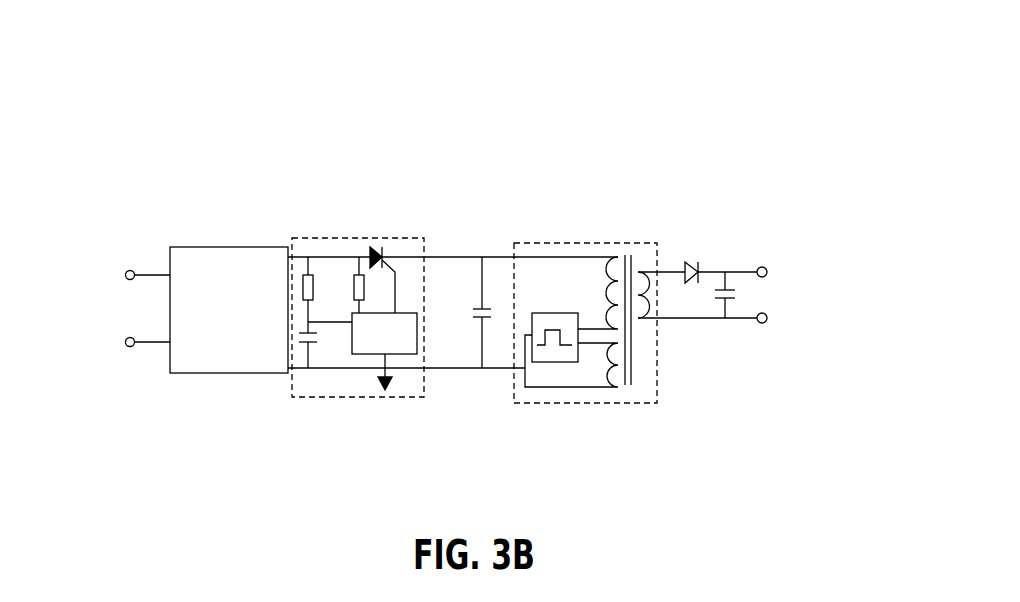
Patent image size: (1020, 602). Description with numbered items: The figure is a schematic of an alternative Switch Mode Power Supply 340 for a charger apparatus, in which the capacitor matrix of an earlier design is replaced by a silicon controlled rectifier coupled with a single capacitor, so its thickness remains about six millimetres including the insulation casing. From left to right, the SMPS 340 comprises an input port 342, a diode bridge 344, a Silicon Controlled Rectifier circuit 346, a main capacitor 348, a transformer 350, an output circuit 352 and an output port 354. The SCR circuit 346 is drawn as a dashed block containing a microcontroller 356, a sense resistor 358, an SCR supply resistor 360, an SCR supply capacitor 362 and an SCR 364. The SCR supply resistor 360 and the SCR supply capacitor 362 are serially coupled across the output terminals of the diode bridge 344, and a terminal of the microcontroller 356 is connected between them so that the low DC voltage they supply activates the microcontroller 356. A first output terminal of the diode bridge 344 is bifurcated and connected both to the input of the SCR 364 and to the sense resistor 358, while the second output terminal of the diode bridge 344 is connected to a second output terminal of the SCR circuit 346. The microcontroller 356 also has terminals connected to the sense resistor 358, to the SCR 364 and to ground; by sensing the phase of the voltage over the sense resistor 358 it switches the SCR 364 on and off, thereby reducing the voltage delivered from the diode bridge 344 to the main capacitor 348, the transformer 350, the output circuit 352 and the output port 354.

The Switch Mode Power Supply 340 is at (222, 80).
The input port 342 is at (123, 305).
The diode bridge 344 is at (230, 373).
The Silicon Controlled Rectifier circuit 346 is at (424, 382).
The main capacitor 348 is at (478, 308).
The transformer 350 is at (592, 405).
The output circuit 352 is at (715, 243).
The output port 354 is at (782, 295).
The microcontroller 356 is at (398, 357).
The sense resistor 358 is at (357, 277).
The SCR supply resistor 360 is at (313, 288).
The SCR supply capacitor 362 is at (313, 345).
The SCR 364 is at (381, 248).